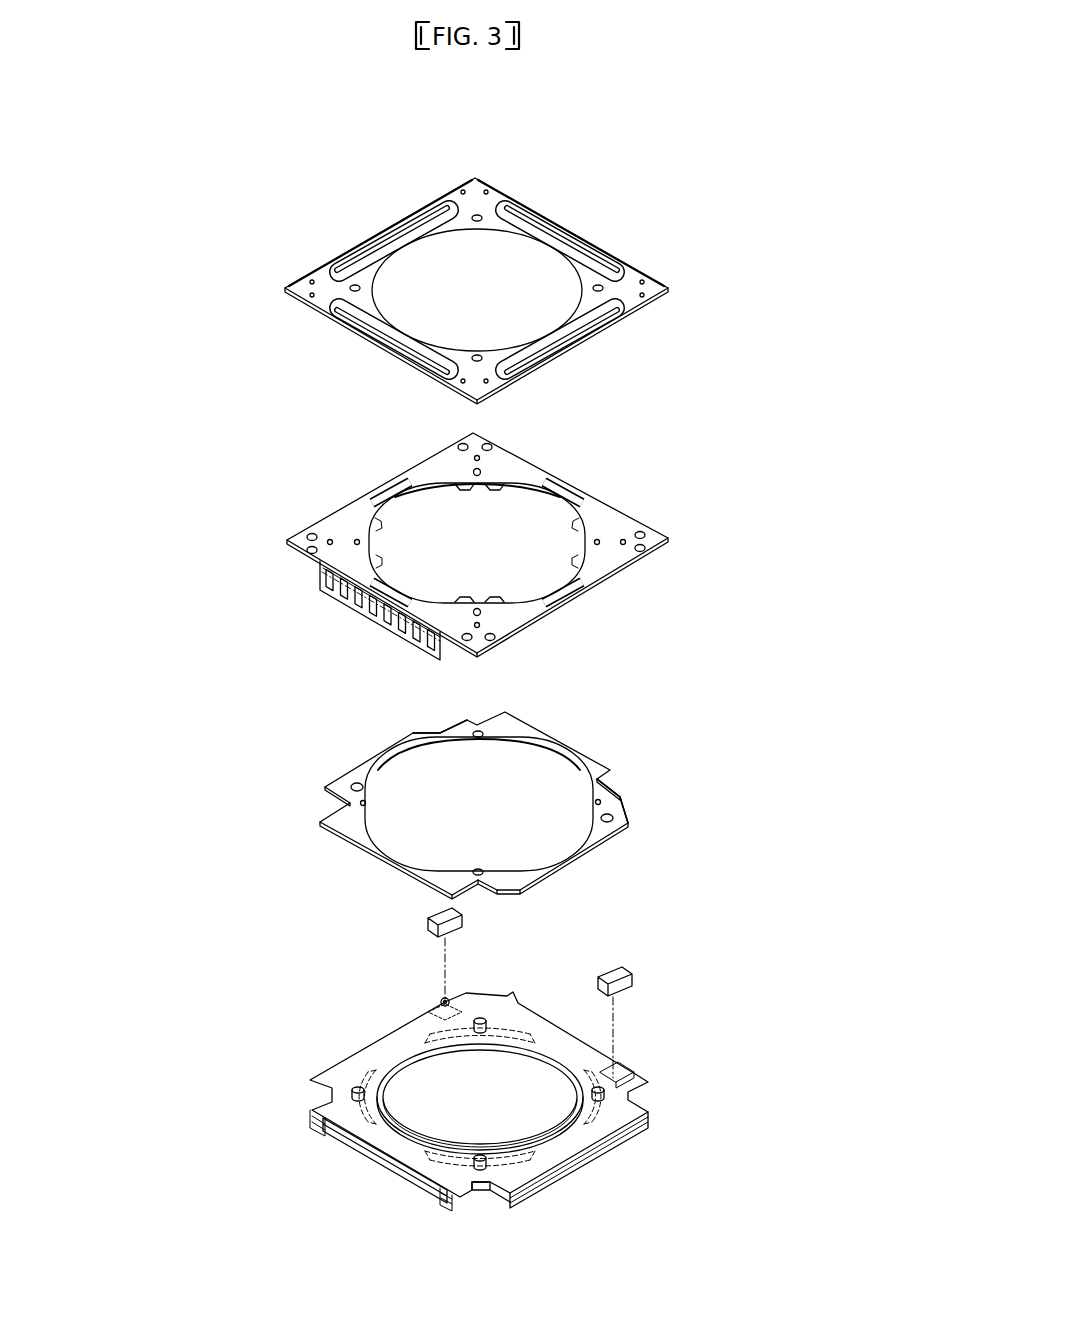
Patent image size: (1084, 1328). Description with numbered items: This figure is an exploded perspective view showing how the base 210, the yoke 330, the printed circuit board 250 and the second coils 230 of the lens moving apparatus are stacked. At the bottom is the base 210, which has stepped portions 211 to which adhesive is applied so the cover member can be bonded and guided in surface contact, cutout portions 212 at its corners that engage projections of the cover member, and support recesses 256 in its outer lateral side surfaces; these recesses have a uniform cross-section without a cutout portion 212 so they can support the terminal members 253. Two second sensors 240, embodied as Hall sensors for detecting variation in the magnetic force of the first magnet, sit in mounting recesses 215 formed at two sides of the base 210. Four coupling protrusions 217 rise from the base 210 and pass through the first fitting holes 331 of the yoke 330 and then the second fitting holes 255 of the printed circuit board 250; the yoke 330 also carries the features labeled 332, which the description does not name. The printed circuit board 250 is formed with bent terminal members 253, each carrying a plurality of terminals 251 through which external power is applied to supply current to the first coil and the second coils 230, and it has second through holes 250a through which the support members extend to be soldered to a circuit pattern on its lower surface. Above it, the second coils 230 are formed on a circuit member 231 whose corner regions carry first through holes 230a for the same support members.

The base 210 is at (368, 980).
The stepped portions 211 is at (598, 1160).
The cutout portions 212 is at (486, 1196).
The mounting recesses 215 is at (450, 1000).
The coupling protrusions 217 is at (313, 1092).
The second coils 230 is at (608, 318).
The first through holes 230a is at (486, 190).
The circuit member 231 is at (650, 262).
The second sensors 240 is at (622, 975).
The printed circuit board 250 is at (618, 482).
The second through holes 250a is at (308, 551).
The terminals 251 is at (362, 618).
The terminal members 253 is at (343, 583).
The second fitting holes 255 is at (470, 470).
The support recesses 256 is at (358, 1150).
The yoke 330 is at (630, 757).
The first fitting holes 331 is at (347, 790).
The corner tab of lower elastic member 332 is at (447, 735).